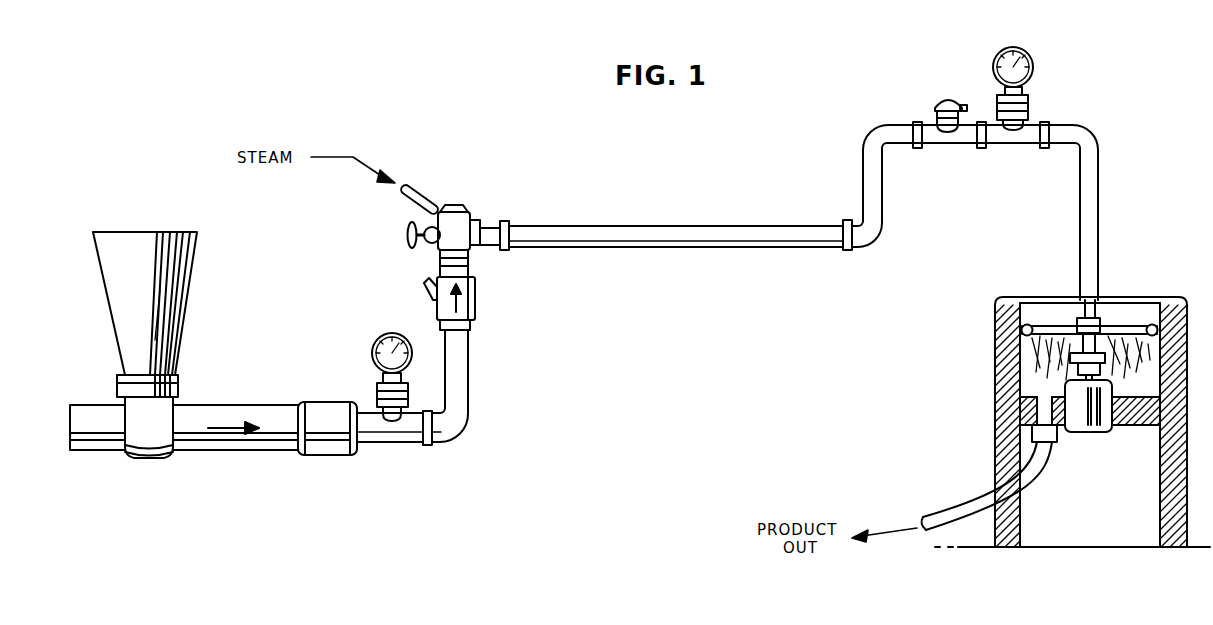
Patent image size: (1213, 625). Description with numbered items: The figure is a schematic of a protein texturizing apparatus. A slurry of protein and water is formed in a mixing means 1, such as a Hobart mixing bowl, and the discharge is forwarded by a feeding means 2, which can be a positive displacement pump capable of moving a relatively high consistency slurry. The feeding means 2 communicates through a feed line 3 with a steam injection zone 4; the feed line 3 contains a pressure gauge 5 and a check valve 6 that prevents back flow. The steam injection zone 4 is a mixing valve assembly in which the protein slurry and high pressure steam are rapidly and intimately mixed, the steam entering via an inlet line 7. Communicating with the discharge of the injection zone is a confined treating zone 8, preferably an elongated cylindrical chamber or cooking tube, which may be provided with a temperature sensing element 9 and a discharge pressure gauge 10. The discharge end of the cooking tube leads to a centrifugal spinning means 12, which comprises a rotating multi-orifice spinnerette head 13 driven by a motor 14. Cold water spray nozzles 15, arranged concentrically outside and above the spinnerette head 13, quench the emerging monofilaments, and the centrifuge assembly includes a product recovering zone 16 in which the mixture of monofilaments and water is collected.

The mixing means 1 is at (170, 310).
The feeding means 2 is at (148, 461).
The feed line 3 is at (468, 358).
The steam injection zone 4 is at (458, 210).
The pressure gauge 5 is at (392, 332).
The check valve 6 is at (475, 295).
The inlet line 7 is at (415, 186).
The confined treating zone 8 is at (712, 228).
The temperature sensing element 9 is at (950, 102).
The discharge pressure gauge 10 is at (1016, 48).
The centrifugal spinning means 12 is at (1054, 288).
The rotating multi-orifice spinnerette head 13 is at (1062, 347).
The motor 14 is at (1080, 413).
The cold water spray nozzles 15 is at (1127, 323).
The product recovering zone 16 is at (1130, 388).